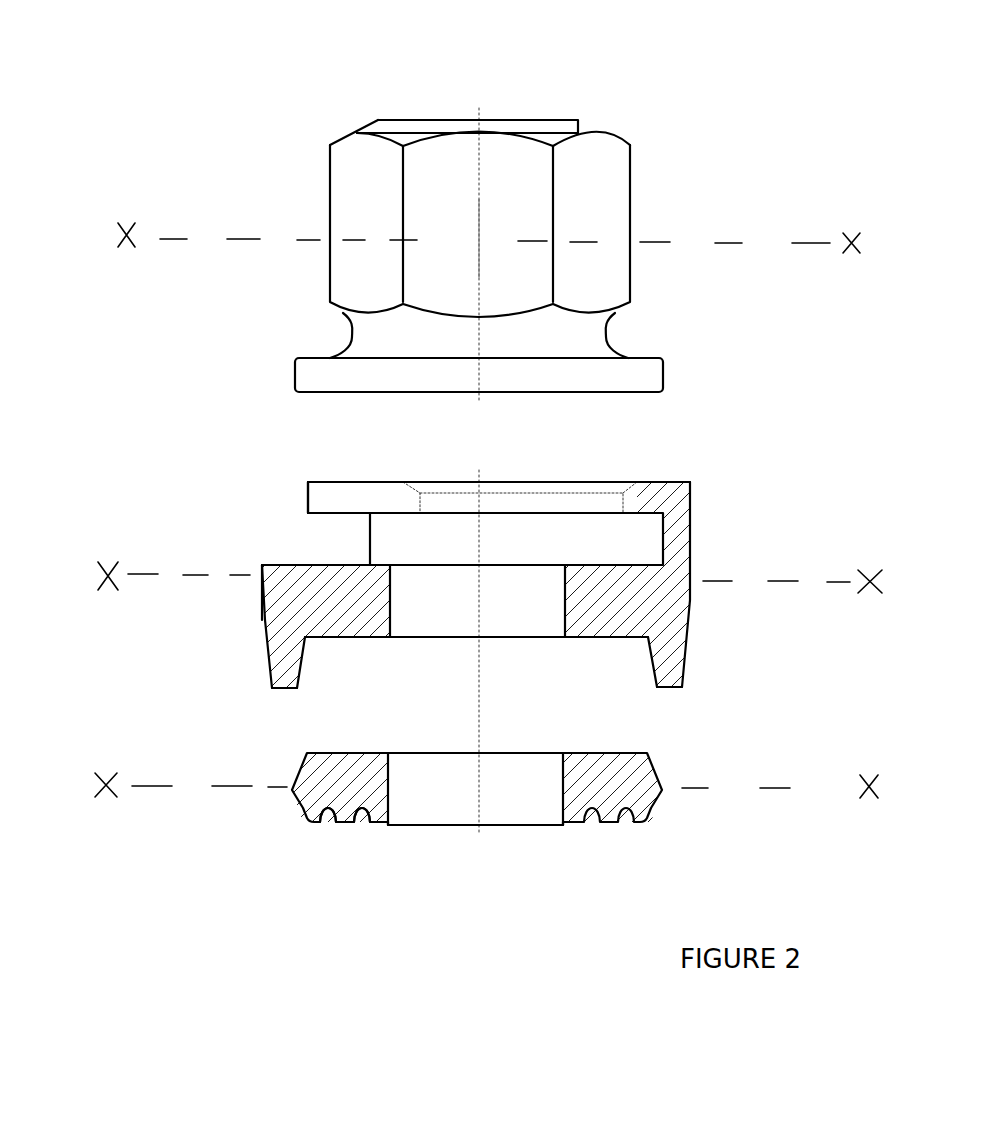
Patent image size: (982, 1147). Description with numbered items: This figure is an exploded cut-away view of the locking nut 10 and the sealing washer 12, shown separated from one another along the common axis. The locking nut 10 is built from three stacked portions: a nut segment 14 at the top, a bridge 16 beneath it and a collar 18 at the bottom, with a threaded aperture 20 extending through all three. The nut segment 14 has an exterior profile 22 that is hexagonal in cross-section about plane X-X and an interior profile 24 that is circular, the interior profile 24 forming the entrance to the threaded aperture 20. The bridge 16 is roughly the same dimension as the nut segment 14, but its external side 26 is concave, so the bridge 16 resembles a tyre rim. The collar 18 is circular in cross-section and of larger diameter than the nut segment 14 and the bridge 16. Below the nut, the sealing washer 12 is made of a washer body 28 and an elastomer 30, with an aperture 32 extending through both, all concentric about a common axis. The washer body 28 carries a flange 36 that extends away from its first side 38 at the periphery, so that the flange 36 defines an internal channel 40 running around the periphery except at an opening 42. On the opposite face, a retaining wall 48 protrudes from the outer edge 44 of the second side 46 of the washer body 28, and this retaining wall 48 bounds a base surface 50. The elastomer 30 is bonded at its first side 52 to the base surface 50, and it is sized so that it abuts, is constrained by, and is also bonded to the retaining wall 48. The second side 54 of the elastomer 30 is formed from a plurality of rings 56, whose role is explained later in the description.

The locking nut 10 is at (658, 178).
The sealing washer 12 is at (204, 671).
The nut segment 14 is at (468, 240).
The bridge 16 is at (408, 335).
The collar 18 is at (479, 375).
The threaded aperture 20 is at (485, 120).
The exterior profile 22 is at (320, 190).
The interior profile 24 is at (440, 120).
The external side 26 is at (610, 338).
The washer body 28 is at (697, 553).
The elastomer 30 is at (655, 808).
The aperture 32 is at (457, 610).
The flange 36 is at (462, 496).
The first side 38 is at (292, 562).
The internal channel 40 is at (462, 539).
The opening 42 is at (308, 535).
The outer edge 44 is at (262, 620).
The second side 46 is at (360, 637).
The retaining wall 48 is at (283, 690).
The base surface 50 is at (518, 637).
The first side 52 is at (557, 753).
The second side 54 is at (390, 805).
The rings 56 is at (345, 826).